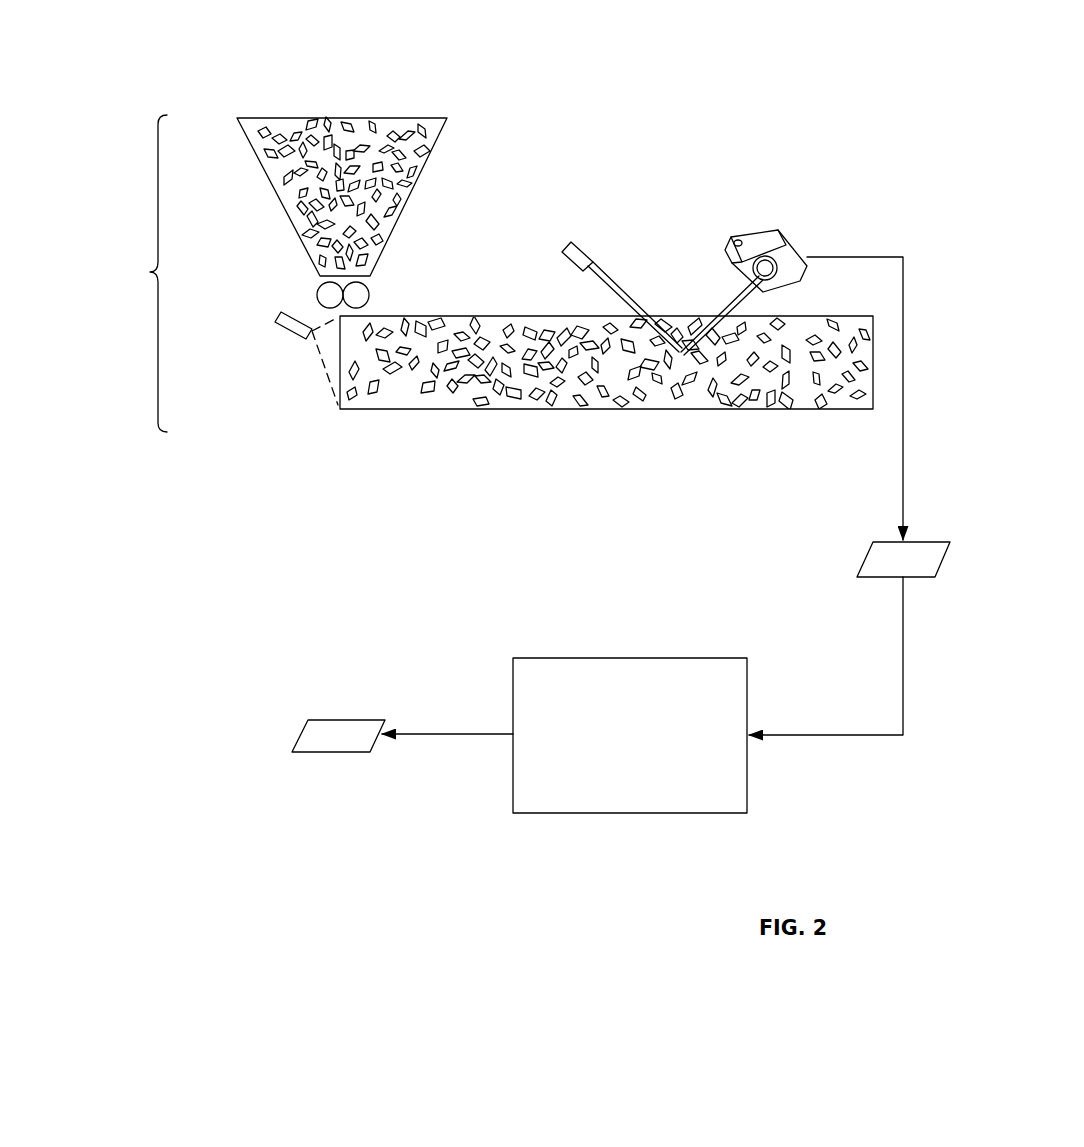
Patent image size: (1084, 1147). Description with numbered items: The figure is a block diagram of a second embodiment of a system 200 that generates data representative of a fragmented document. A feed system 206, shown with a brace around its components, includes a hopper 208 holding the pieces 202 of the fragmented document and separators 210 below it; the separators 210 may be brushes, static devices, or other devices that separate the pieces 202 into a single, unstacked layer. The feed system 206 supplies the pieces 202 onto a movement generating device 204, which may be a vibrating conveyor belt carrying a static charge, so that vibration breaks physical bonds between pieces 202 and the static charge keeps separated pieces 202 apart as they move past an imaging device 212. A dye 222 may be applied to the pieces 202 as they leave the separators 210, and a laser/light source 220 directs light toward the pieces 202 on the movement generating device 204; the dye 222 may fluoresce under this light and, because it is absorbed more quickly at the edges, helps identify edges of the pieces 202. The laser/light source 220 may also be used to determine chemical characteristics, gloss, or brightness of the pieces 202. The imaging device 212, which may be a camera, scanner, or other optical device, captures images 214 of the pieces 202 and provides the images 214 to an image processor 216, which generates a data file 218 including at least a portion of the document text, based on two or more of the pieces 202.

The system 200 is at (802, 71).
The pieces 202 is at (836, 410).
The movement generating device 204 is at (405, 410).
The feed system 206 is at (150, 272).
The hopper 208 is at (447, 118).
The separators 210 is at (318, 291).
The imaging device 212 is at (775, 231).
The images 214 is at (868, 555).
The image processor 216 is at (532, 658).
The data file 218 is at (341, 719).
The laser/light source 220 is at (572, 247).
The dye 222 is at (282, 315).